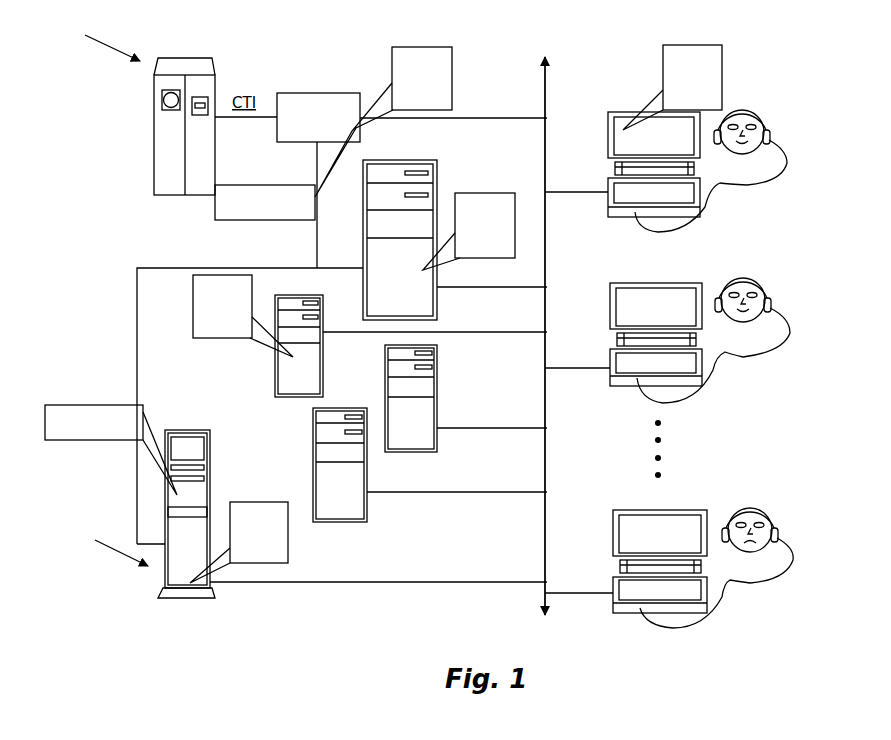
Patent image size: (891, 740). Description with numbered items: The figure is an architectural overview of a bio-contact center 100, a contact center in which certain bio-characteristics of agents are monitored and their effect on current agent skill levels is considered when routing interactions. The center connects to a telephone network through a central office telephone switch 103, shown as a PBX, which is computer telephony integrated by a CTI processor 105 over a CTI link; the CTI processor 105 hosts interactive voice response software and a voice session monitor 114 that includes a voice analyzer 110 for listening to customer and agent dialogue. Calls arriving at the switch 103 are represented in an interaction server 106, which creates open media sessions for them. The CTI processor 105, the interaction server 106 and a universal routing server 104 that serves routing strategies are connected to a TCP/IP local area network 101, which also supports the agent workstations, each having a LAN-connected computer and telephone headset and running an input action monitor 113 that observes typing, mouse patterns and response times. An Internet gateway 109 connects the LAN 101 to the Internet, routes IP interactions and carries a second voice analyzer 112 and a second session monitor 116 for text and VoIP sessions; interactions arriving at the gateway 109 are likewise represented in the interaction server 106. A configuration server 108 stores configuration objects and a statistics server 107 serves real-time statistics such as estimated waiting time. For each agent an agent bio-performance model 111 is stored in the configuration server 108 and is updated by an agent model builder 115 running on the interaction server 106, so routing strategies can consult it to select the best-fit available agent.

The bio-contact center 100 is at (93, 172).
The local area network 101 is at (547, 93).
The central office telephone switch 103 is at (217, 85).
The universal routing server 104 is at (313, 462).
The CTI processor 105 is at (303, 84).
The interaction server 106 is at (437, 178).
The statistics server 107 is at (437, 402).
The configuration server 108 is at (270, 388).
The Internet gateway 109 is at (187, 430).
The voice analyzer 110 is at (452, 78).
The agent bio-performance model 111 is at (227, 272).
The voice analyzer 112 is at (290, 522).
The input action monitor 113 is at (722, 72).
The session monitor 114 is at (240, 185).
The agent model builder 115 is at (488, 192).
The session manager (gateway side) 116 is at (102, 440).